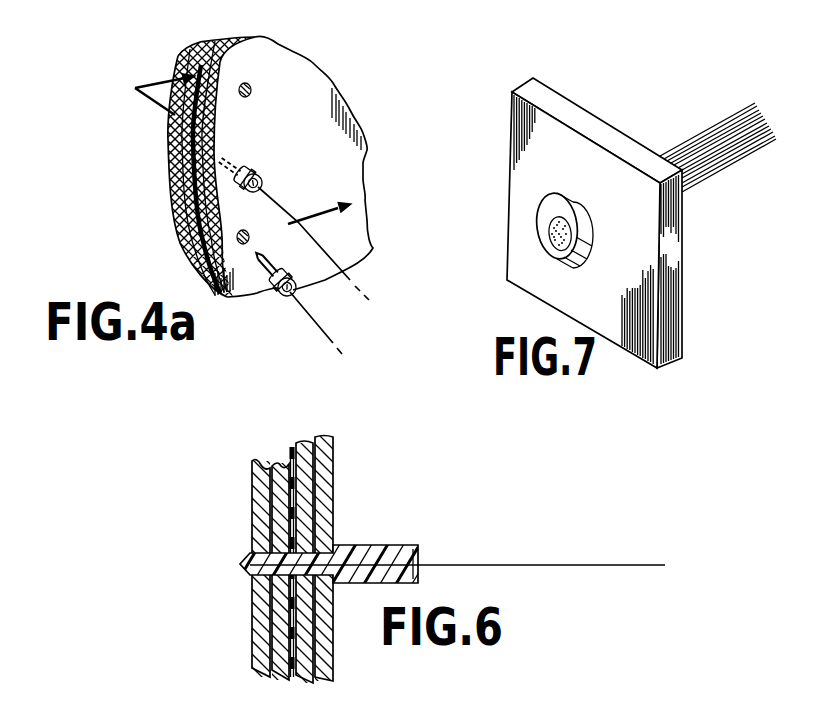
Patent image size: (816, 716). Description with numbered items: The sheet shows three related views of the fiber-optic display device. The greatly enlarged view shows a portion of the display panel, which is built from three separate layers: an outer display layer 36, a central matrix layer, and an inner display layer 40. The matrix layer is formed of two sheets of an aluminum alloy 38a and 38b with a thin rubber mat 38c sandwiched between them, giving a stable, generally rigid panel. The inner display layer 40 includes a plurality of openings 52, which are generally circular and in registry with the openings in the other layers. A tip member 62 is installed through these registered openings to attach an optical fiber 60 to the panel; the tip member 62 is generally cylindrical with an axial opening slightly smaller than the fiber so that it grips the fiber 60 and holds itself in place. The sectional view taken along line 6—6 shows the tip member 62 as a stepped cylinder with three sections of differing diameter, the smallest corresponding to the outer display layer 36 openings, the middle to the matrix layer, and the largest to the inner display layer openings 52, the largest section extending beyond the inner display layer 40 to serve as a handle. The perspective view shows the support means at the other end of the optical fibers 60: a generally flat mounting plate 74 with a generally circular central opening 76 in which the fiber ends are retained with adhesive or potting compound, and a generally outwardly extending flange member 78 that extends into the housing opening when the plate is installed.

In FIG. 4A, the section line 6— 6 is at (244, 141).
In FIG. 4A, the outer display layer 36 is at (172, 157).
In FIG. 6, the outer display layer 36 is at (255, 490).
In FIG. 4A, the aluminum alloy sheet 38a is at (220, 40).
In FIG. 6, the aluminum alloy sheet 38a is at (308, 443).
In FIG. 4A, the aluminum alloy sheet 38b is at (200, 43).
In FIG. 6, the aluminum alloy sheet 38b is at (282, 468).
In FIG. 4A, the rubber mat 38c is at (190, 218).
In FIG. 6, the rubber mat 38c is at (290, 677).
In FIG. 4A, the inner display layer 40 is at (318, 88).
In FIG. 6, the inner display layer 40 is at (333, 472).
In FIG. 4A, the inner display layer openings 52 is at (249, 83).
In FIG. 4A, the optical fiber 60 is at (333, 254).
In FIG. 7, the optical fiber 60 is at (713, 171).
In FIG. 6, the optical fiber 60 is at (477, 565).
In FIG. 4A, the tip member 62 is at (270, 261).
In FIG. 6, the tip member 62 is at (372, 550).
In FIG. 7, the mounting plate 74 is at (676, 242).
In FIG. 7, the central opening 76 is at (560, 257).
In FIG. 7, the flange member 78 is at (597, 258).